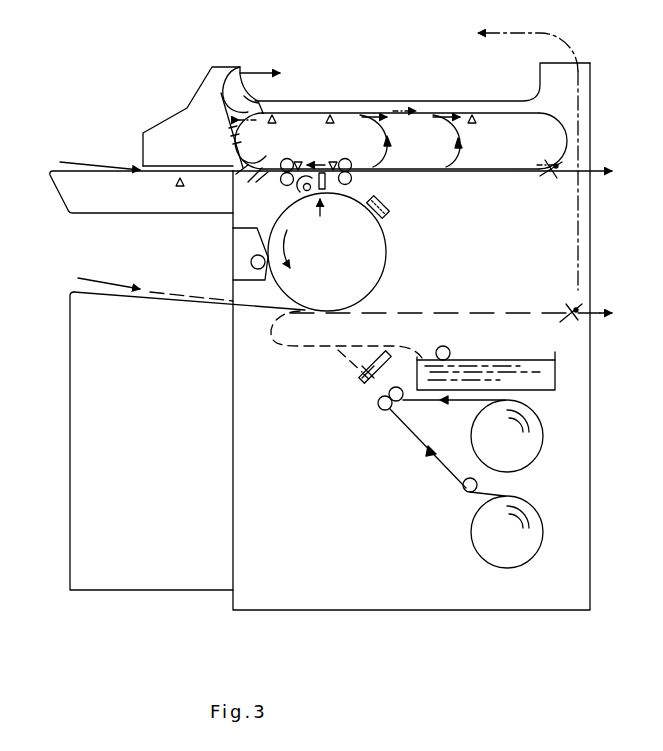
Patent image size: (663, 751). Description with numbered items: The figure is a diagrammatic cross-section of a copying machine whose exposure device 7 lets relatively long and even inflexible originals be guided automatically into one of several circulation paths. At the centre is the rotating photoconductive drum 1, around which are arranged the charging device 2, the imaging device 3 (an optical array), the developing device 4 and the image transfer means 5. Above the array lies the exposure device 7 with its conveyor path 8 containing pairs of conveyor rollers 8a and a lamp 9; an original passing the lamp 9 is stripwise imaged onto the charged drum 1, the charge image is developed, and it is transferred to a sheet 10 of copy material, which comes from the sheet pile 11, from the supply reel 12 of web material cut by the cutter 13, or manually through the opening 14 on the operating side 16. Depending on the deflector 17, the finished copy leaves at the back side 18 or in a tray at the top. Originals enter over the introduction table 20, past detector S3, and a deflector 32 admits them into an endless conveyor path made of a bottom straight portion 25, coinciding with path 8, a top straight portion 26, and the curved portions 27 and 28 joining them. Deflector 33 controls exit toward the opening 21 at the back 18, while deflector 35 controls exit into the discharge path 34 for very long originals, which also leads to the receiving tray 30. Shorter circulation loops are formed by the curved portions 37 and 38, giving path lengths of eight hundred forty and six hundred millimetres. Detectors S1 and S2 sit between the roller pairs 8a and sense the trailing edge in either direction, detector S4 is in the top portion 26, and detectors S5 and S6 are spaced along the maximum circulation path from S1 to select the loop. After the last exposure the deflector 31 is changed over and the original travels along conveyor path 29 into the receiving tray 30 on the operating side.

The photoconductive drum 1 is at (387, 260).
The charging device 2 is at (390, 215).
The imaging device 3 is at (326, 190).
The developing device 4 is at (238, 262).
The image transfer means 5 is at (327, 318).
The exposure device 7 is at (319, 221).
The conveyor path 8 is at (240, 173).
The conveyor rollers 8a is at (283, 184).
The lamp 9 is at (307, 193).
The sheet of copy material 10 is at (478, 312).
The sheet pile 11 is at (496, 362).
The supply reel of copy material 12 is at (528, 505).
The cutter 13 is at (358, 378).
The opening 14 is at (78, 288).
The operating side 16 is at (70, 400).
The deflector 17 is at (570, 306).
The side opposite operating side 18 is at (591, 366).
The introduction table 20 is at (92, 170).
The opening 21 is at (600, 166).
The bottom straight path portion 25 is at (490, 172).
The top straight path portion 26 is at (490, 112).
The curved path portion 27 is at (565, 130).
The curved path portion 28 is at (258, 159).
The conveyor path 29 is at (224, 121).
The receiving tray 30 is at (393, 100).
The deflector 31 is at (240, 150).
The deflector 32 is at (256, 174).
The deflector 33 is at (550, 177).
The discharge path 34 is at (222, 77).
The deflector 35 is at (254, 99).
The curved path portion 37 is at (388, 143).
The curved path portion 38 is at (458, 143).
The detector S1 is at (298, 163).
The detector S2 is at (332, 163).
The detector S3 is at (176, 190).
The detector S4 is at (477, 124).
The detector S5 is at (335, 121).
The detector S6 is at (271, 124).